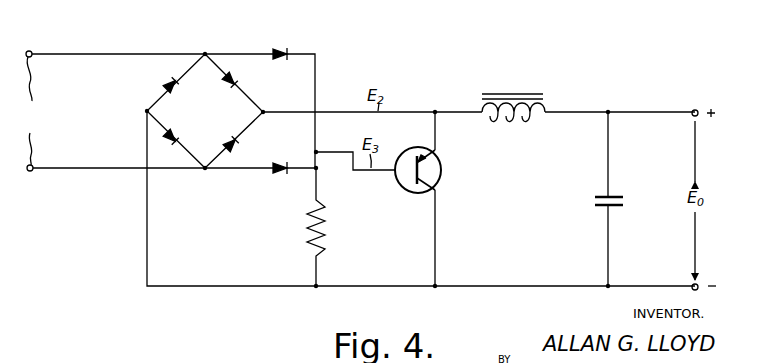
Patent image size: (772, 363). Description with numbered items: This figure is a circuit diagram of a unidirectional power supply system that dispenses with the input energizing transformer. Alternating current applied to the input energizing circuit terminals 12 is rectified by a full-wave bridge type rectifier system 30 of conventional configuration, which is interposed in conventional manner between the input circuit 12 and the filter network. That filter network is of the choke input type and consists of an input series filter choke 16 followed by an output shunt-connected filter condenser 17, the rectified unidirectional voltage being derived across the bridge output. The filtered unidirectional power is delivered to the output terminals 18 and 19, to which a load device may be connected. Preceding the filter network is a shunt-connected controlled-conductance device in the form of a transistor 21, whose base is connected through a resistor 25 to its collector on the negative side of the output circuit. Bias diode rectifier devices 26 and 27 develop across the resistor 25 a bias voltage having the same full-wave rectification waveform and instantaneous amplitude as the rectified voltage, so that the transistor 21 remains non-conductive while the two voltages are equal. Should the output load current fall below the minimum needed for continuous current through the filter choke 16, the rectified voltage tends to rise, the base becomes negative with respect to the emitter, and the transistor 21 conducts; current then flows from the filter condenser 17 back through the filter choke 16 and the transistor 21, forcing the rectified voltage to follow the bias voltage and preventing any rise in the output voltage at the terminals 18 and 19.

The input terminals 12 is at (32, 111).
The full-wave bridge type rectifier system 30 is at (214, 120).
The bias diode rectifier device 26 is at (278, 48).
The bias diode rectifier device 27 is at (280, 175).
The resistor 25 is at (326, 220).
The transistor 21 is at (442, 170).
The filter choke 16 is at (519, 119).
The filter condenser 17 is at (593, 203).
The output terminal 18 is at (701, 103).
The output terminal 19 is at (692, 290).